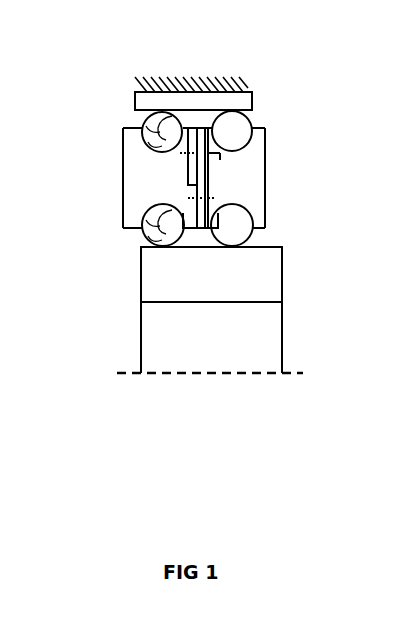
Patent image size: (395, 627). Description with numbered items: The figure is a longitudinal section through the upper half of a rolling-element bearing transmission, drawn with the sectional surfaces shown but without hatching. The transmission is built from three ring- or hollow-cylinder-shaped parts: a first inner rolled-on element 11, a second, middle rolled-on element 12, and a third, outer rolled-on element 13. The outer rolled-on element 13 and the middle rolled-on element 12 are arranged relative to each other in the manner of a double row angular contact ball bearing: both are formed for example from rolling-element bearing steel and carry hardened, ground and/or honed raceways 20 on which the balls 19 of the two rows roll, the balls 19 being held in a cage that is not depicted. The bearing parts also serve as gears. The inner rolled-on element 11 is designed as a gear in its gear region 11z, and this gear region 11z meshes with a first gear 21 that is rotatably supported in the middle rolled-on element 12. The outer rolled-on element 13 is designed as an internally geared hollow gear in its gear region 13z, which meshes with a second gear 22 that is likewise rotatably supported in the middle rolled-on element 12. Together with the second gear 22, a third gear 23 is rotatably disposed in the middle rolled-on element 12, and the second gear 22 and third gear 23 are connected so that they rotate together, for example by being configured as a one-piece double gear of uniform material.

The first inner rolled-on element 11 is at (250, 277).
The gear region 11z is at (203, 226).
The second, middle rolled-on element 12 is at (243, 170).
The third, outer rolled-on element 13 is at (240, 103).
The gear region 13z is at (195, 128).
The balls 19 is at (143, 117).
The raceways 20 is at (155, 125).
The first gear 21 is at (210, 188).
The second gear 22 is at (188, 162).
The third gear 23 is at (217, 162).